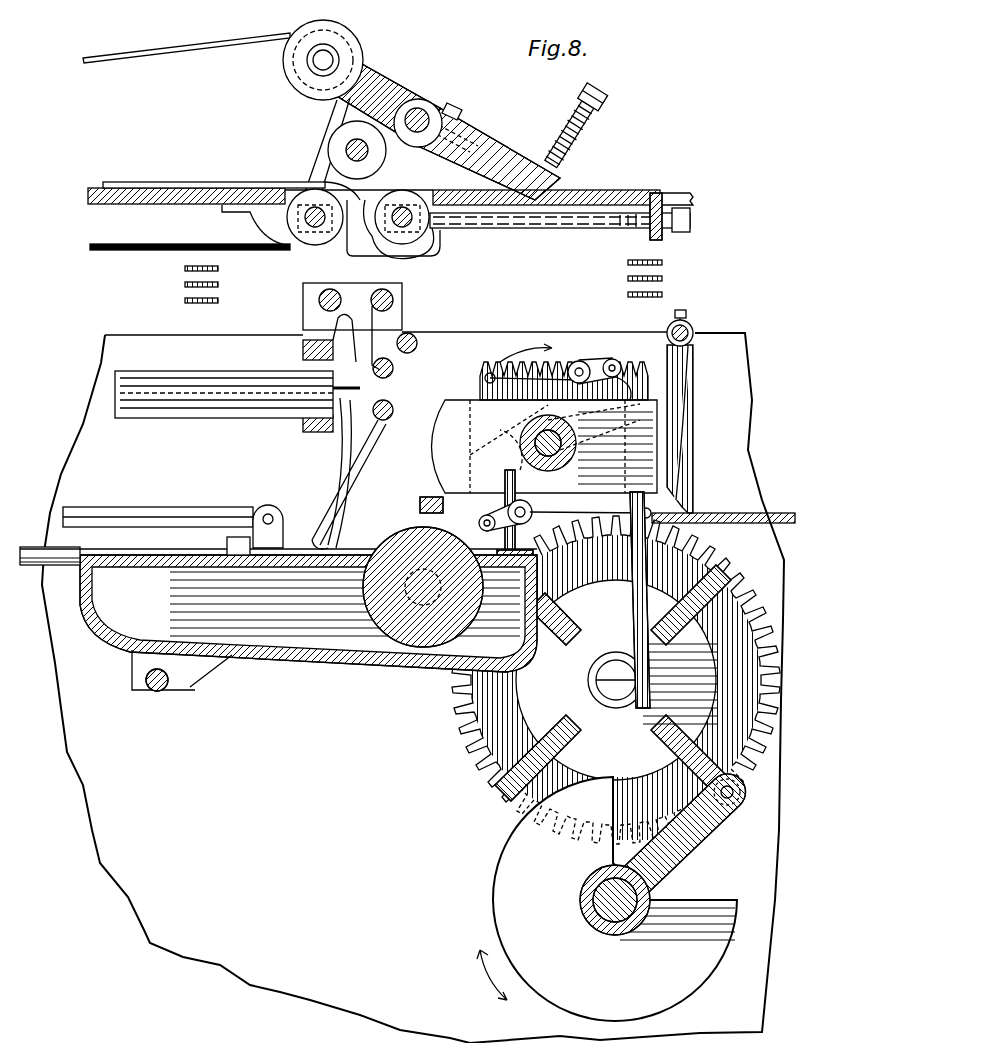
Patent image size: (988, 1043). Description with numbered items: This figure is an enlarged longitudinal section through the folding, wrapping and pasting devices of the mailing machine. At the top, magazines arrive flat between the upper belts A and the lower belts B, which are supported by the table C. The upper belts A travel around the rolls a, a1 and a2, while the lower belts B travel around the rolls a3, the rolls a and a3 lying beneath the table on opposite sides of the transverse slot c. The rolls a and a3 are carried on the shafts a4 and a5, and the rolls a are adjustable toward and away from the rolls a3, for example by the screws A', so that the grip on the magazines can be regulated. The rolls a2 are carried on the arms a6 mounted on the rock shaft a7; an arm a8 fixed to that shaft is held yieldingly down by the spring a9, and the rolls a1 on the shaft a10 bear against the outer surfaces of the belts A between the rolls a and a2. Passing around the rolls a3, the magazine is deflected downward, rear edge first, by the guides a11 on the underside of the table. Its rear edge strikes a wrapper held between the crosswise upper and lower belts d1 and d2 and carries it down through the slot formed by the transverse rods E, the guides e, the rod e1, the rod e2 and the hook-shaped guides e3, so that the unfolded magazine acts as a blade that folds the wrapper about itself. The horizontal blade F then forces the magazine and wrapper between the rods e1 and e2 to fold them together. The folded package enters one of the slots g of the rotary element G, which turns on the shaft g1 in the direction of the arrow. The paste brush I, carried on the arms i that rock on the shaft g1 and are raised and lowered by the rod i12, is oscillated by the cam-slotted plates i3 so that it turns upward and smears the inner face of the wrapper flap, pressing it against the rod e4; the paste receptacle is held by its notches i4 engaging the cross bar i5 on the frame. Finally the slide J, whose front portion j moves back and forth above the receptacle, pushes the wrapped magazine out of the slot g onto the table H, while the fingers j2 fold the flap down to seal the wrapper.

The upper belts A is at (260, 107).
The screws A' is at (563, 190).
The rolls a is at (412, 233).
The rolls a1 is at (338, 138).
The rolls a2 is at (310, 60).
The rolls a3 is at (303, 222).
The shaft a4 is at (430, 218).
The shaft a5 is at (314, 226).
The arms a6 is at (390, 103).
The rock shaft a7 is at (421, 115).
The arm a8 is at (487, 157).
The spring a9 is at (597, 133).
The shaft a10 is at (346, 152).
The guides a11 is at (354, 248).
The lower belts B is at (166, 245).
The table C is at (603, 193).
The transverse slot c is at (366, 203).
The upper belts d1 is at (185, 268).
The lower belts d2 is at (215, 303).
The transverse rods E is at (394, 303).
The guides e is at (345, 322).
The rod e1 is at (393, 372).
The rod e2 is at (390, 422).
The hook-shaped guides e3 is at (342, 452).
The rod e4 is at (418, 344).
The horizontal blade F is at (200, 388).
The rotary element G is at (610, 420).
The slots g is at (478, 378).
The shaft g1 is at (562, 422).
The table H is at (735, 513).
The brush I is at (303, 663).
The arms i is at (507, 440).
The plates i3 is at (400, 612).
The notches i4 is at (182, 676).
The cross bar i5 is at (157, 692).
The rod i12 is at (648, 650).
The slide J is at (285, 520).
The front portion j is at (505, 498).
The fingers j2 is at (677, 377).